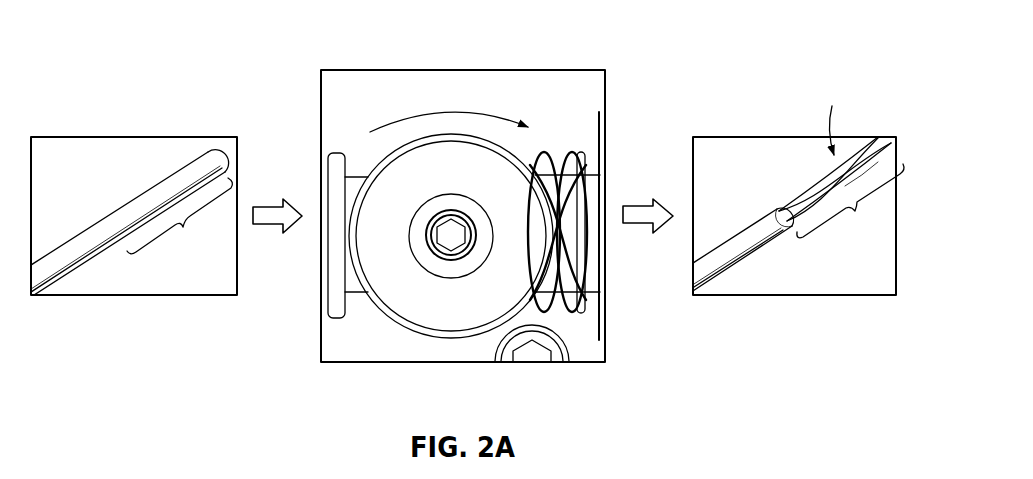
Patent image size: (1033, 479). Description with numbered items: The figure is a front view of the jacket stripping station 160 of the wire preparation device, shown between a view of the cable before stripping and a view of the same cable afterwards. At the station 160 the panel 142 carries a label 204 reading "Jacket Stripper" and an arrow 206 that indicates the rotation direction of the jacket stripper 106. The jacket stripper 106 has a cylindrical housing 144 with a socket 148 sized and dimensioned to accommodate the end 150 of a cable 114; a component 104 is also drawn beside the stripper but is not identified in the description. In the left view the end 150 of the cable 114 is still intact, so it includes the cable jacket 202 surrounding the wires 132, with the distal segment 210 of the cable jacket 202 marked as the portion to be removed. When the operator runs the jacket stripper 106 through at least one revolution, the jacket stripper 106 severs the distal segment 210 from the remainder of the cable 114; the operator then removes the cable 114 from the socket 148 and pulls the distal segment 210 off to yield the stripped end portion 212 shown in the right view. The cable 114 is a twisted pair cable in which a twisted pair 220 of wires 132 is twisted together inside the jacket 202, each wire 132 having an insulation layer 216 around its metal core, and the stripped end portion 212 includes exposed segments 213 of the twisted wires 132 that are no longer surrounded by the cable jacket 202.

The cable 114 is at (92, 237).
The cable jacket 202 is at (145, 210).
The end of the cable 150 is at (221, 156).
The distal segment of the cable jacket 210 is at (183, 227).
The labels 204 is at (320, 77).
The arrows 206 is at (443, 110).
The jacket stripping station 160 is at (460, 216).
The frame wall 104 is at (599, 106).
The panel 142 is at (568, 133).
The jacket stripper 106 is at (385, 318).
The socket 148 is at (435, 252).
The cylindrical housing 144 is at (497, 293).
The wires 132 is at (812, 188).
The twisted pair 220 is at (832, 119).
The stripped end portion 212 is at (855, 212).
The exposed segments 213 is at (842, 190).
The insulation layer 216 is at (845, 214).